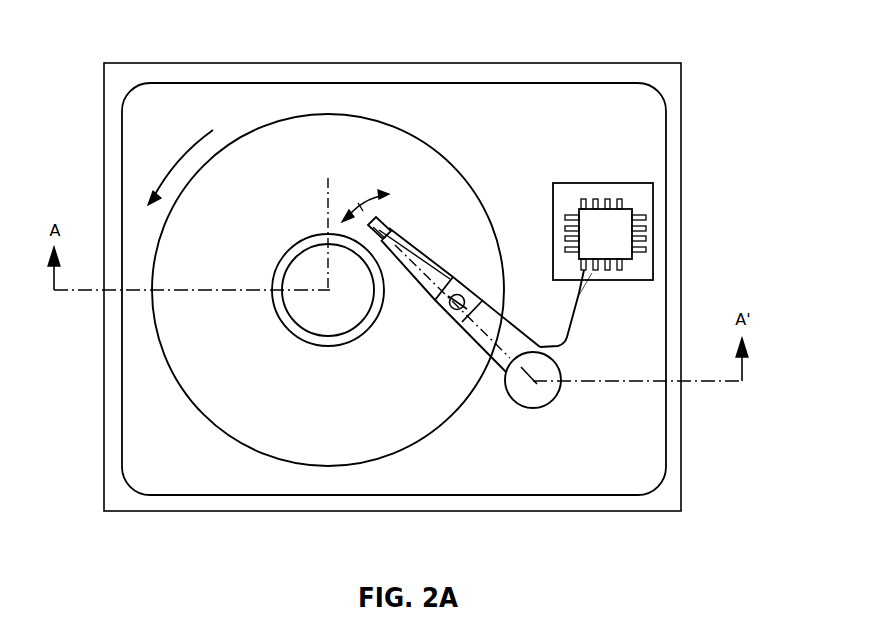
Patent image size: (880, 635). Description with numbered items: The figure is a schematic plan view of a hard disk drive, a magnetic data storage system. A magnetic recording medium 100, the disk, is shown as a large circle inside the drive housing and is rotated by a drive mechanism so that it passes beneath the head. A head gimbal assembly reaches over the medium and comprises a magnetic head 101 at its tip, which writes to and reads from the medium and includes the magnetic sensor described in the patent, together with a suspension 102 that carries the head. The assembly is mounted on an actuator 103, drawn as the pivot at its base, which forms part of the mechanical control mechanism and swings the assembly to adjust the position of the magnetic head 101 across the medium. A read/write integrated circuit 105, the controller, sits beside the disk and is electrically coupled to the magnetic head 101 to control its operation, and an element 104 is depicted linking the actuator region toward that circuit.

The magnetic recording medium 100 is at (327, 122).
The magnetic head 101 is at (385, 222).
The suspension 102 is at (428, 290).
The actuator 103 is at (530, 400).
The flexible printed circuit 104 is at (580, 295).
The read/write integrated circuit 105 is at (625, 208).